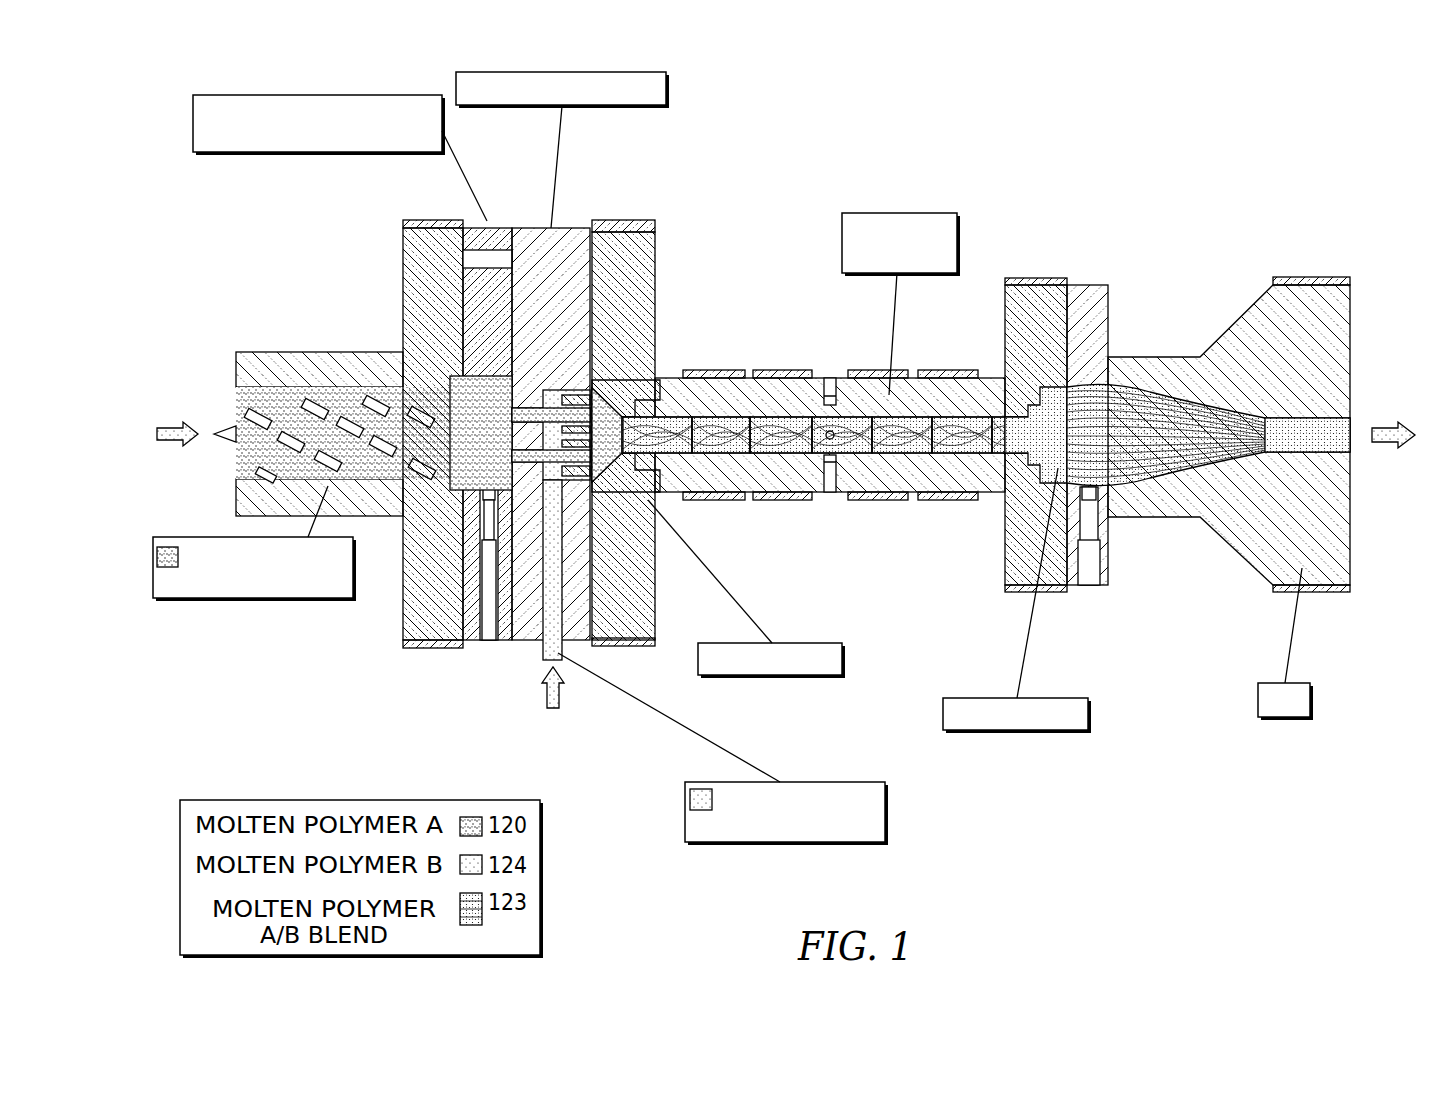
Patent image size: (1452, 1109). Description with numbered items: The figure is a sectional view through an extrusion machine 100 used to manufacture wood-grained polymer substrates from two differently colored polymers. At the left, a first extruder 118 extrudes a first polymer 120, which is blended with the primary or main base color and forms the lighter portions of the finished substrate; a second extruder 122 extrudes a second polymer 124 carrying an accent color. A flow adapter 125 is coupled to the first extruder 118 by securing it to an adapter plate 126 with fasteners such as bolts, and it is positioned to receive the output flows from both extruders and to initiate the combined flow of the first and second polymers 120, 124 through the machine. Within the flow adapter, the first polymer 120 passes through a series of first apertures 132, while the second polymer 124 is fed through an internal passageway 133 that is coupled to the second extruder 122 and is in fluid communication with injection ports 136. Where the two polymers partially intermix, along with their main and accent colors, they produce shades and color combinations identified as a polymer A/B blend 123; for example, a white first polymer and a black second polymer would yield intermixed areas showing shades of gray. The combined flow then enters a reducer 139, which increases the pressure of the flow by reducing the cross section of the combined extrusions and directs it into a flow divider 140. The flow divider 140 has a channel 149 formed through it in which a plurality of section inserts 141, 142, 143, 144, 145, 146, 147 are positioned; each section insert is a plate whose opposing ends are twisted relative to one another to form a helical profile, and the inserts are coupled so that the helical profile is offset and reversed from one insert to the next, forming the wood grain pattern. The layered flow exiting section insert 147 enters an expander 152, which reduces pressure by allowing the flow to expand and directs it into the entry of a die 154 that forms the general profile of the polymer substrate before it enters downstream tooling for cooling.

The extrusion machine 100 is at (1150, 196).
The first extruder 118 is at (290, 598).
The first polymer 120 is at (462, 395).
The second extruder 122 is at (820, 782).
The polymer A/B blend 123 is at (626, 682).
The second polymer 124 is at (557, 432).
The flow adapter 125 is at (525, 72).
The adapter plate 126 is at (260, 95).
The first apertures 132 is at (585, 405).
The internal passageway 133 is at (565, 595).
The injection ports 136 is at (595, 563).
The reducer 139 is at (775, 643).
The flow divider 140 is at (903, 212).
The section insert 141 is at (673, 455).
The section insert 142 is at (745, 455).
The section insert 143 is at (777, 453).
The section insert 144 is at (847, 453).
The section insert 145 is at (913, 442).
The section insert 146 is at (940, 442).
The section insert 147 is at (995, 453).
The channel 149 is at (770, 425).
The expander 152 is at (1020, 698).
The die 154 is at (1295, 683).